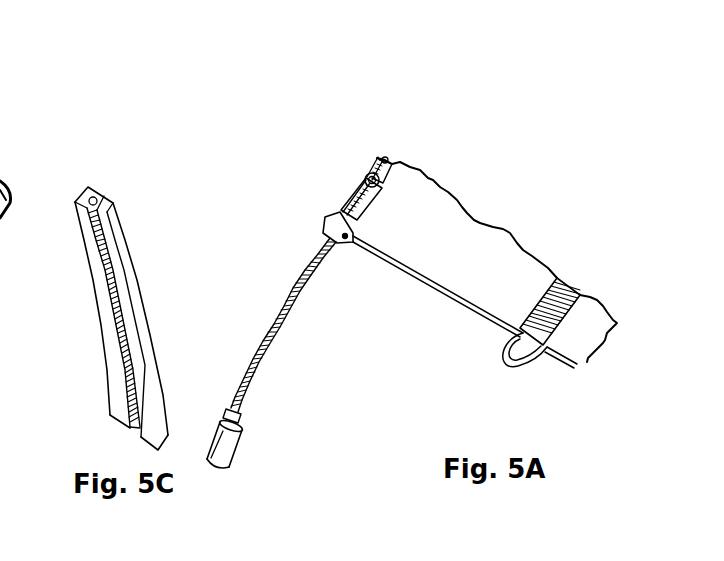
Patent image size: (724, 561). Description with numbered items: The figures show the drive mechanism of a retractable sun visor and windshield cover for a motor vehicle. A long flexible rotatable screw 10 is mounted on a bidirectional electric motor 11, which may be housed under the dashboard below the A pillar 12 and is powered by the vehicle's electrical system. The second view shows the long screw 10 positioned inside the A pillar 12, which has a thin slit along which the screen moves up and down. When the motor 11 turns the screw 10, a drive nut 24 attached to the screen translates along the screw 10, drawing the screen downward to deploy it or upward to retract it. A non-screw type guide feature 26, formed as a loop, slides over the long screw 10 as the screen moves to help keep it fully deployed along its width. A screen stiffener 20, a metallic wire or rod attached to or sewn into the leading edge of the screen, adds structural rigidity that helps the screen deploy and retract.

In FIG. 5C, the rotatable screw 10 is at (112, 310).
In FIG. 5A, the rotatable screw 10 is at (277, 335).
In FIG. 5A, the bidirectional electric motor 11 is at (241, 461).
In FIG. 5C, the A pillar 12 is at (77, 248).
In FIG. 5A, the screen stiffener 20 is at (447, 297).
In FIG. 5A, the drive nut 24 is at (336, 246).
In FIG. 5A, the guide feature 26 is at (362, 170).